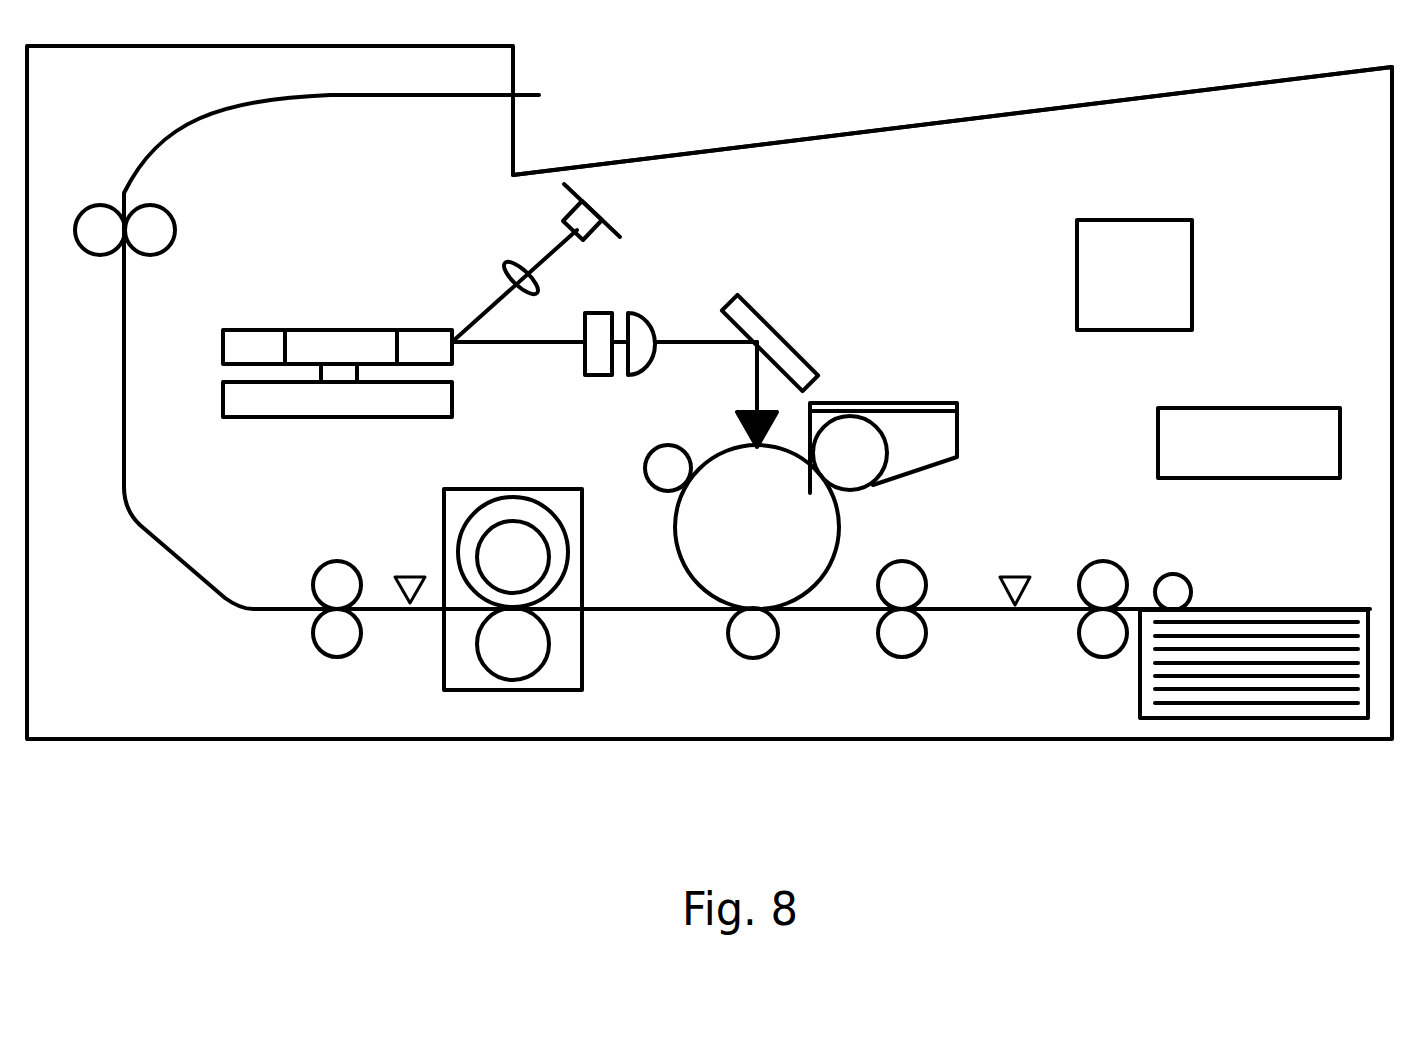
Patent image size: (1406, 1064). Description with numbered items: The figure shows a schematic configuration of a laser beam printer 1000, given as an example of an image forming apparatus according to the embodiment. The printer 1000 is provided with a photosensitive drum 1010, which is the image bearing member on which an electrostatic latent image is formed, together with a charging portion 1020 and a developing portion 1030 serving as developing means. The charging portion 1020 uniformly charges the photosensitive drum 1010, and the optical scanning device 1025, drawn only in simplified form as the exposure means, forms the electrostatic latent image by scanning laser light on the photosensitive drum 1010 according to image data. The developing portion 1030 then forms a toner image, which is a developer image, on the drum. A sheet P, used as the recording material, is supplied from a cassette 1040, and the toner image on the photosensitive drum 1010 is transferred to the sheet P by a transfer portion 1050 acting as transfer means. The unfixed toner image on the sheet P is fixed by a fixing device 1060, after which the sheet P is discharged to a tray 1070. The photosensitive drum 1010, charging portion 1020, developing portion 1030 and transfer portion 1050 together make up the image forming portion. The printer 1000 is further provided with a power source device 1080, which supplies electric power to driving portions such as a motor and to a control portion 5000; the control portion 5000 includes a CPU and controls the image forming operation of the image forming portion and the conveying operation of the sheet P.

The laser beam printer 1000 is at (710, 737).
The photosensitive drum 1010 is at (673, 535).
The charging portion 1020 is at (645, 460).
The optical scanning device 1025 is at (247, 330).
The developing portion 1030 is at (957, 412).
The cassette 1040 is at (1257, 682).
The transfer portion 1050 is at (738, 655).
The fixing device 1060 is at (444, 668).
The tray 1070 is at (732, 147).
The power source device 1080 is at (1240, 408).
The control portion 5000 is at (1192, 283).
The sheet P is at (1205, 703).